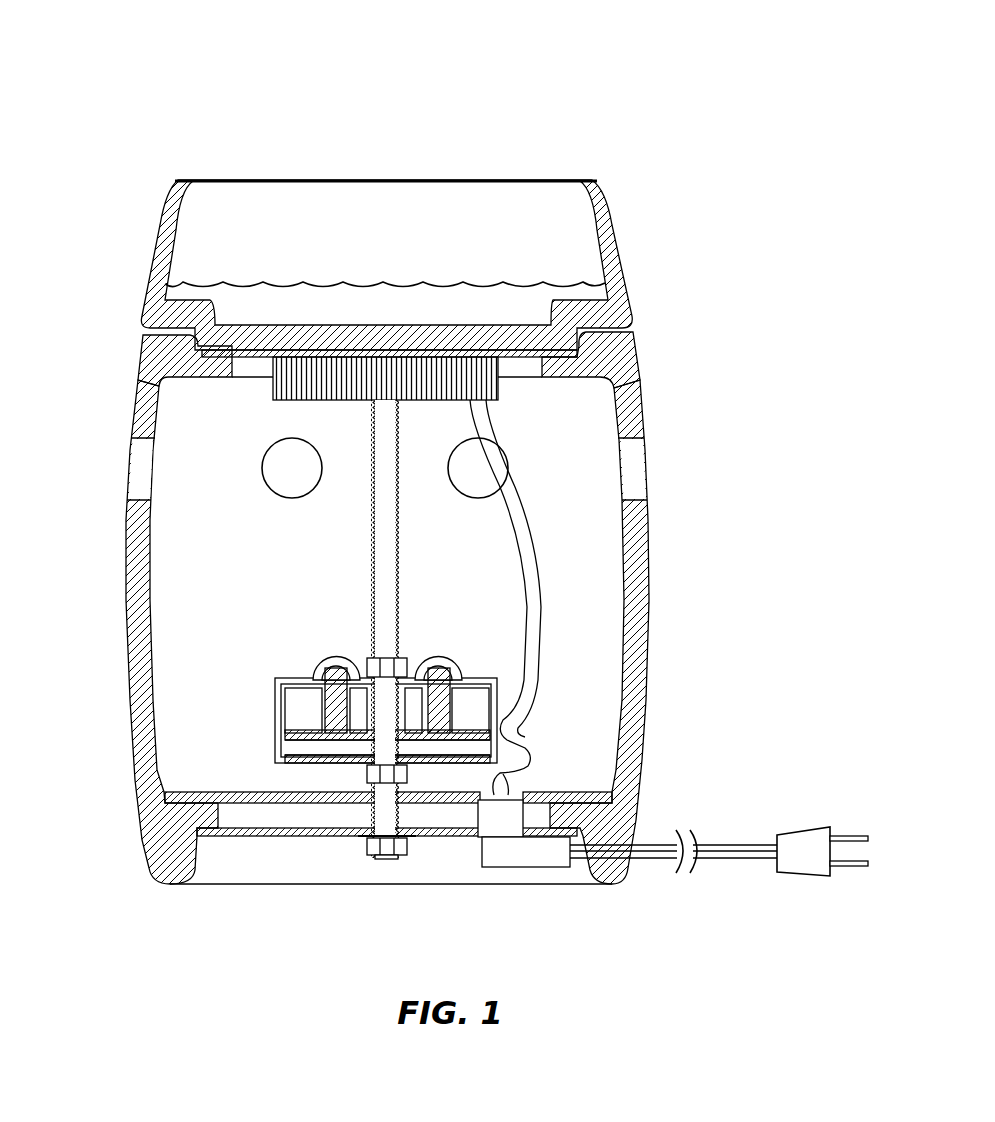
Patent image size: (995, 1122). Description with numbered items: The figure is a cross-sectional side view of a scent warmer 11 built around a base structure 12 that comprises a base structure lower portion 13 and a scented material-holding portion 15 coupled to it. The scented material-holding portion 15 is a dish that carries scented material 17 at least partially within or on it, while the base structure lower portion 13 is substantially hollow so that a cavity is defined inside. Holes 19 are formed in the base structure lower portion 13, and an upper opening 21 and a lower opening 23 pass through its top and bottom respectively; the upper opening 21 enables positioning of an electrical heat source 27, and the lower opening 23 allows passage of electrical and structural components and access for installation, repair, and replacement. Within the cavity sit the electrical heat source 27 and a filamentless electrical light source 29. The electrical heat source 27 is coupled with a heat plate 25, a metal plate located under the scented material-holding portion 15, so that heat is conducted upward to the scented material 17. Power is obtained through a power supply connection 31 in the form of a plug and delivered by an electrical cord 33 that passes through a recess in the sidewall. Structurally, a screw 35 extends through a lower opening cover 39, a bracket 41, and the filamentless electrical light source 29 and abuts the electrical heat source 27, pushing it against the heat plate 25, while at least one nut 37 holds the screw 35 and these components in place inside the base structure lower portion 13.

The scent warmer 11 is at (454, 112).
The base structure 12 is at (633, 367).
The base structure lower portion 13 is at (647, 578).
The scented material-holding portion 15 is at (633, 268).
The scented material 17 is at (283, 285).
The holes 19 is at (140, 498).
The upper opening 21 is at (230, 384).
The lower opening 23 is at (238, 830).
The heat plate 25 is at (545, 416).
The electrical heat source 27 is at (273, 400).
The filamentless electrical light source 29 is at (258, 709).
The power supply connection 31 is at (798, 830).
The electrical cord 33 is at (660, 845).
The screw 35 is at (375, 562).
The nut 37 is at (408, 847).
The lower opening cover 39 is at (327, 838).
The bracket 41 is at (238, 792).